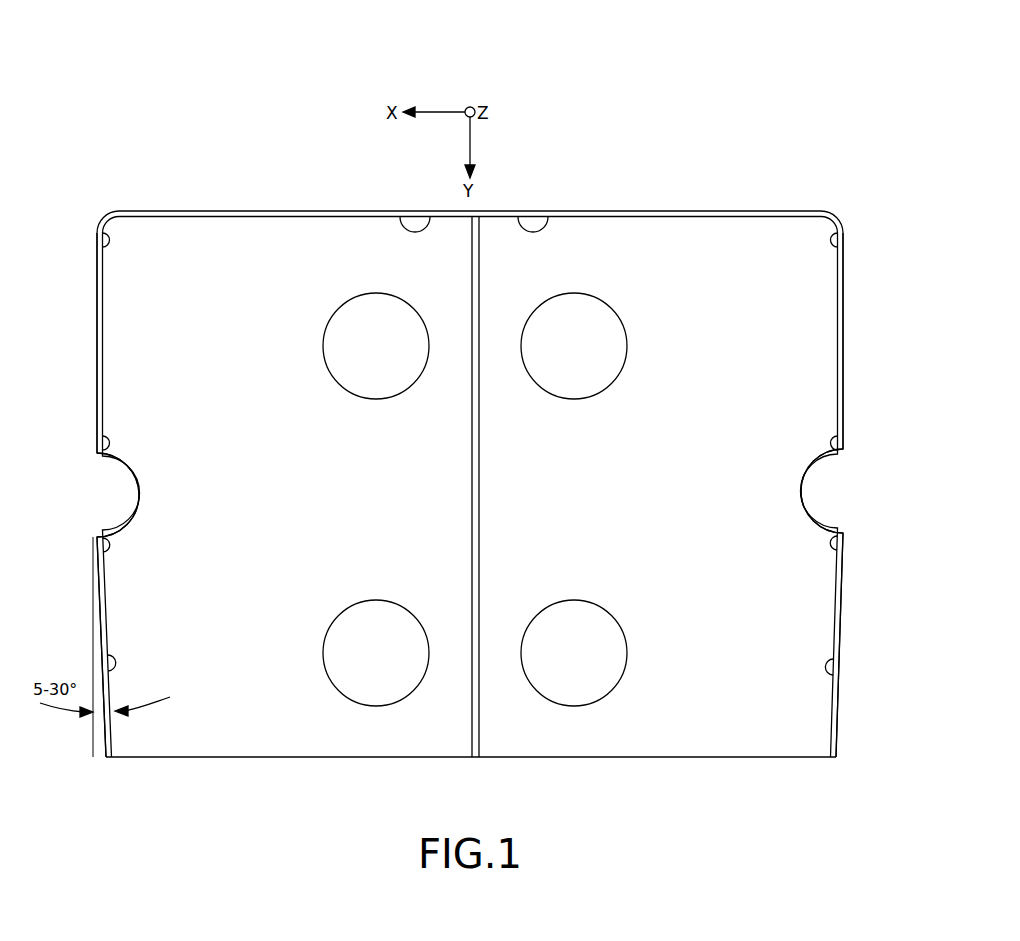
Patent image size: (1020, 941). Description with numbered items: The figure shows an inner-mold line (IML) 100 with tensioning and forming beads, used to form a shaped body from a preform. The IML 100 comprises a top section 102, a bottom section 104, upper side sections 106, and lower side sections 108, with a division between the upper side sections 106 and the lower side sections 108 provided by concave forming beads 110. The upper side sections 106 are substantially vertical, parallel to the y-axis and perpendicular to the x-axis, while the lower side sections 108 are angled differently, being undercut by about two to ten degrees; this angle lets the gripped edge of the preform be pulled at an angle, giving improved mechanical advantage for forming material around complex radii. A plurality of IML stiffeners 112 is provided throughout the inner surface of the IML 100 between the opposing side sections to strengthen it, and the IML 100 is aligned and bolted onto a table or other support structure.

The inner-mold line 100 is at (470, 390).
The top section 102 is at (540, 210).
The bottom section 104 is at (383, 757).
The upper side sections 106 is at (97, 330).
The lower side sections 108 is at (100, 760).
The concave forming beads 110 is at (130, 506).
The IML stiffeners 112 is at (620, 262).